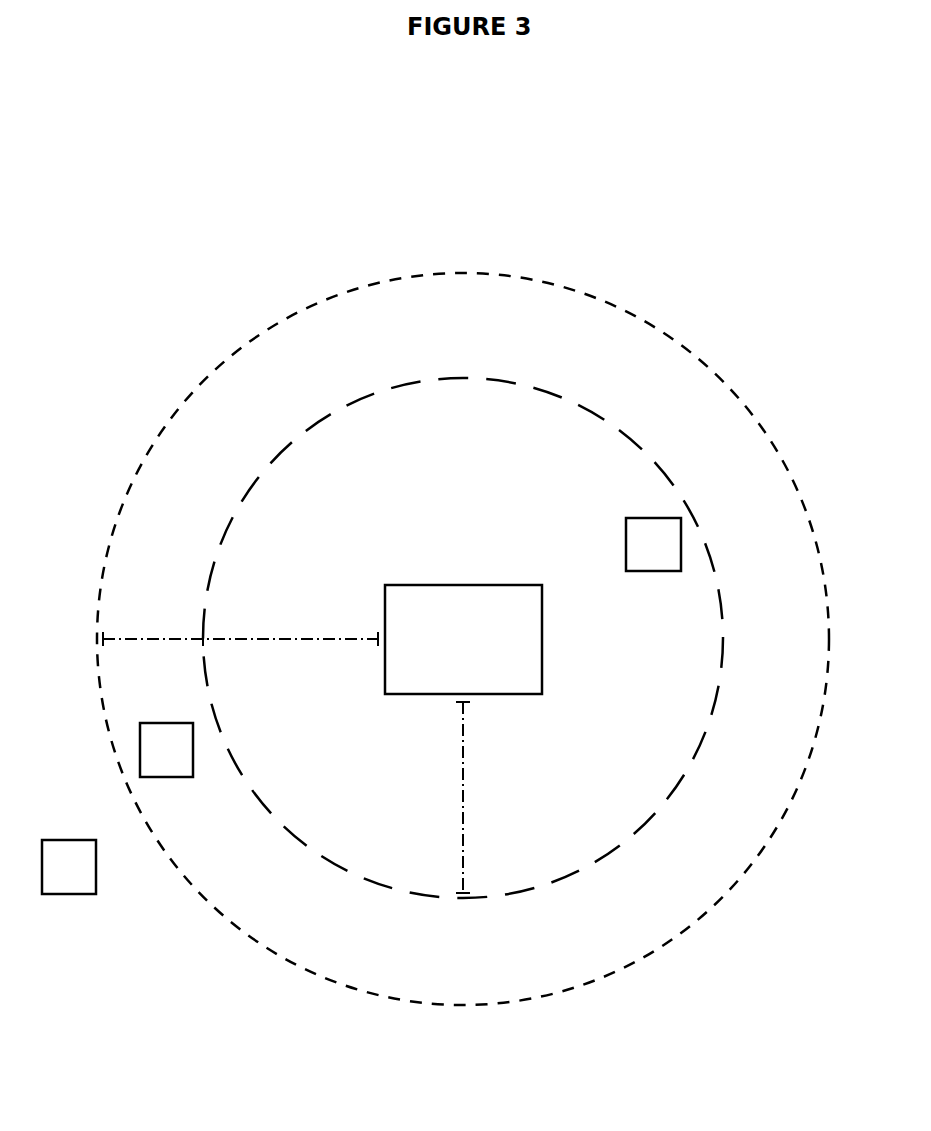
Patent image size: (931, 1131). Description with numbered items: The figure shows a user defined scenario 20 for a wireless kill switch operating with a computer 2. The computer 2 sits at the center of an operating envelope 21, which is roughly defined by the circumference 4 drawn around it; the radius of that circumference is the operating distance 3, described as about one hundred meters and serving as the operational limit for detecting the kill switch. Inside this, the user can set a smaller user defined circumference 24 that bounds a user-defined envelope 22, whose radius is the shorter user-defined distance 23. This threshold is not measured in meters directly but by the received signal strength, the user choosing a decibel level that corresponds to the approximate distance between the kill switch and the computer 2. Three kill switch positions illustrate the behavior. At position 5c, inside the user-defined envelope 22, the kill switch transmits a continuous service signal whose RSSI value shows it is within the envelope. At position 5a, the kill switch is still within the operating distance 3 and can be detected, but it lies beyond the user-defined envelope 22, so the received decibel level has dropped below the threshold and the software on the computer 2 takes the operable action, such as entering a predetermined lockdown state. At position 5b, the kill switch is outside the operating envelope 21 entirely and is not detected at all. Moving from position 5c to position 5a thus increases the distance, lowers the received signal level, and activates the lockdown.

The user defined scenario 20 is at (193, 264).
The circumference 4 is at (463, 272).
The user defined circumference 24 is at (463, 377).
The operating envelope 21 is at (683, 402).
The user-defined envelope 22 is at (318, 482).
The computer 2 is at (463, 585).
The distance D1 3 is at (260, 665).
The user-defined distance D2 23 is at (439, 786).
The position of wireless kill switch 5a is at (167, 777).
The position of wireless kill switch 5b is at (69, 894).
The position of wireless kill switch 5c is at (653, 571).